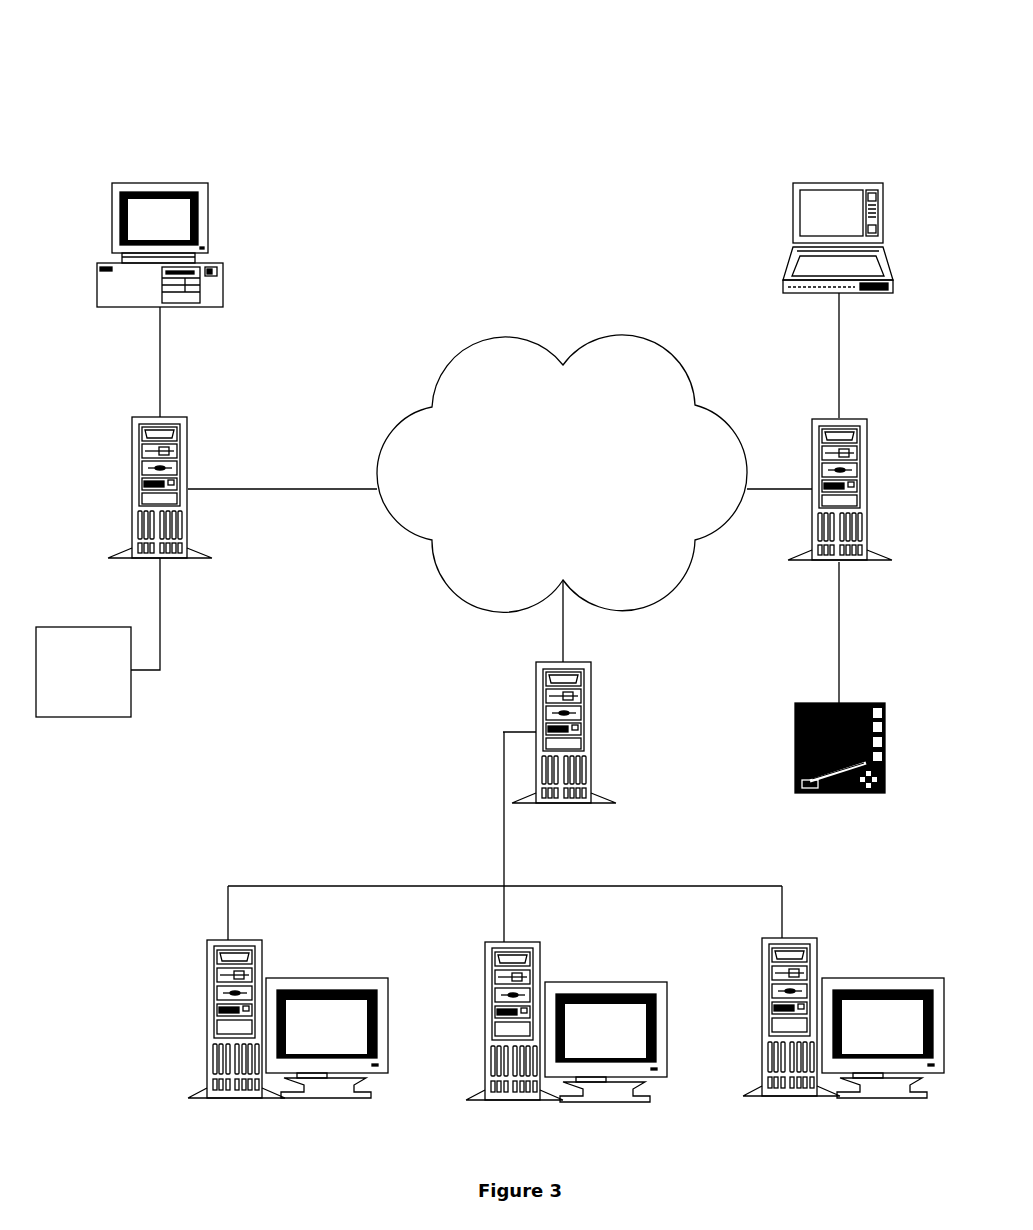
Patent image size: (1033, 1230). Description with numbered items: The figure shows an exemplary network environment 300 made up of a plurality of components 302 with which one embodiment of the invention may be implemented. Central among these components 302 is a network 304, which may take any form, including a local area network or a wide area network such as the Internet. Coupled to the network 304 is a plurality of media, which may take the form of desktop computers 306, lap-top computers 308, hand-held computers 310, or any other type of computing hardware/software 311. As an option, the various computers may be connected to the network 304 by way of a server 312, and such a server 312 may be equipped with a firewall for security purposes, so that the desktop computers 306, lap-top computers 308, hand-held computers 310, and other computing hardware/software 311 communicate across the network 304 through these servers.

The network environment 300 is at (718, 150).
The components 302 is at (283, 792).
The network 304 is at (502, 335).
The desktop computers 306 is at (223, 273).
The lap-top computers 308 is at (792, 277).
The hand-held computers 310 is at (795, 747).
The computing hardware/software 311 is at (69, 717).
The server 312 is at (590, 732).